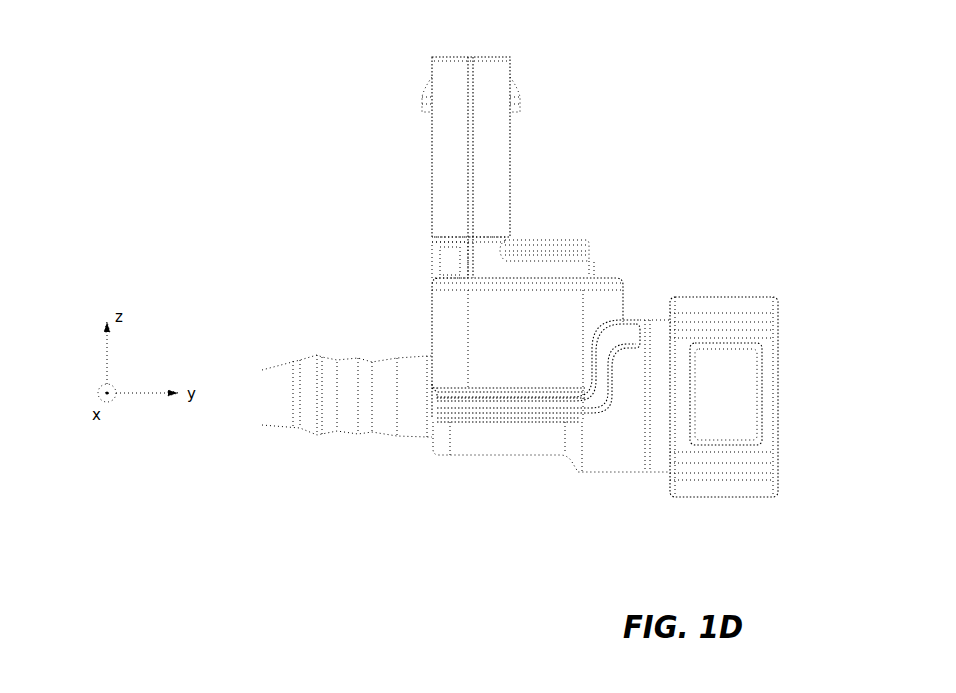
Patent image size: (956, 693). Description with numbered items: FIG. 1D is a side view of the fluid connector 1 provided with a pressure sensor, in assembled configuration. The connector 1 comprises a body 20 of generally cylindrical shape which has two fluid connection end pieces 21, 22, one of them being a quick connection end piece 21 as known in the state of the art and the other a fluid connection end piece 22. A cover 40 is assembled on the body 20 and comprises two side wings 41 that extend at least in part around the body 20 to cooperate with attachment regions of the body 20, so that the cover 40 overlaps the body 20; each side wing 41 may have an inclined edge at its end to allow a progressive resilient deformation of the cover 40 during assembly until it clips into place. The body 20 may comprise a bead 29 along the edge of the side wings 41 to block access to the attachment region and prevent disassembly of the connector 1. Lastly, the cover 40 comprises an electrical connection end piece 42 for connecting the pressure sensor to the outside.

The fluid connector 1 is at (694, 158).
The body 20 is at (450, 425).
The quick connection end piece 21 is at (740, 463).
The fluid connection end piece 22 is at (302, 392).
The bead 29 is at (518, 403).
The cover 40 is at (433, 237).
The side wing 41 is at (490, 328).
The electrical connection end piece 42 is at (438, 138).